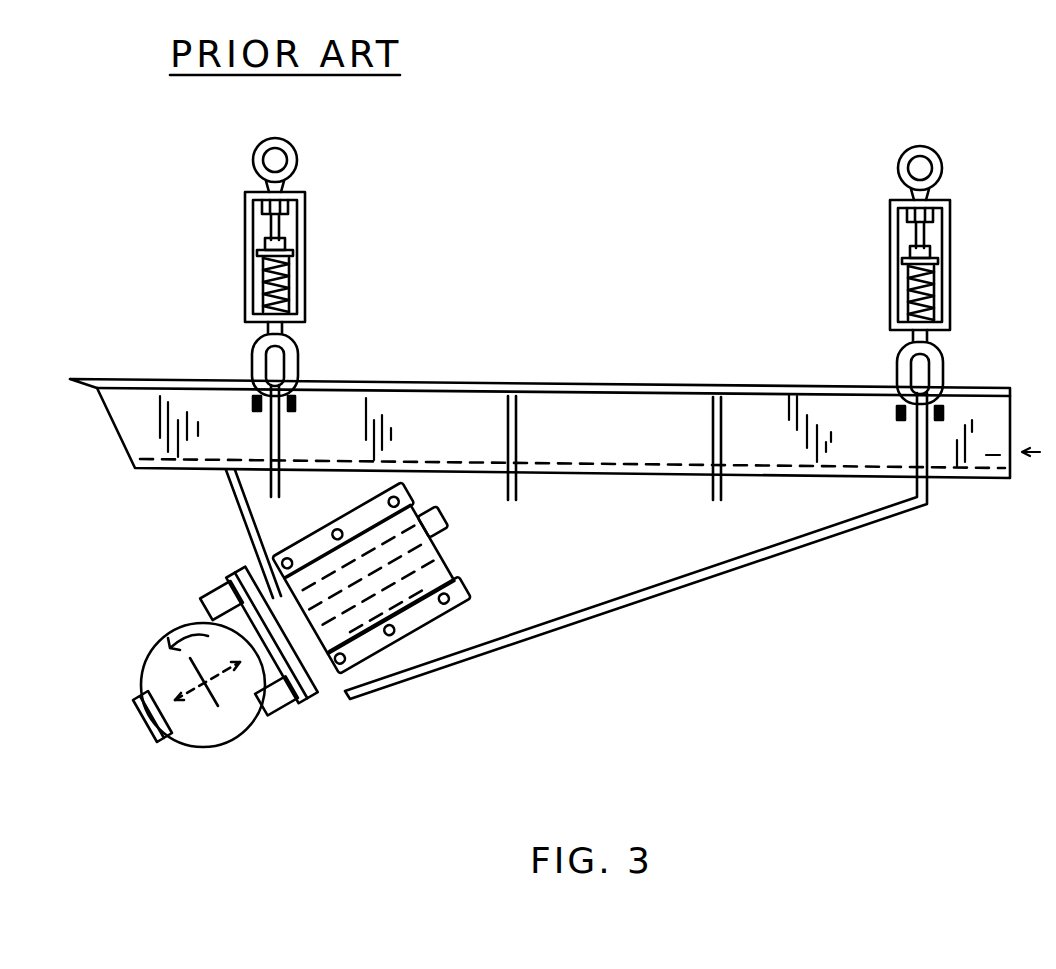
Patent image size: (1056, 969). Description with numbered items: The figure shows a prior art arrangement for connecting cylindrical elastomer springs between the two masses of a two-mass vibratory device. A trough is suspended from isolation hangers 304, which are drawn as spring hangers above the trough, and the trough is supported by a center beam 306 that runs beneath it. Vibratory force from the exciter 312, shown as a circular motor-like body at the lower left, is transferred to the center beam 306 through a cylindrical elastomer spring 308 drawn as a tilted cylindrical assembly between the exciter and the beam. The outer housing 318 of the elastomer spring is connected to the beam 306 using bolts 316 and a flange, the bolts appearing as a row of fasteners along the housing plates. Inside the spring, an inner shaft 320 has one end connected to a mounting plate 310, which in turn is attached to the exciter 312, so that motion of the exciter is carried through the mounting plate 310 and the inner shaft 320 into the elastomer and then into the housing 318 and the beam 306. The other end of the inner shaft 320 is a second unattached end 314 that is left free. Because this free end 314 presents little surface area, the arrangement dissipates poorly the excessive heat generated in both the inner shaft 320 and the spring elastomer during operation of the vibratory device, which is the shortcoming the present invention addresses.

The isolation hangers 304 is at (305, 229).
The center beam 306 is at (666, 592).
The cylindrical elastomer spring 308 is at (557, 394).
The mounting plate 310 is at (302, 705).
The exciter 312 is at (170, 742).
The second unattached end 314 is at (450, 531).
The bolts 316 is at (393, 492).
The outer housing 318 is at (430, 618).
The inner shaft 320 is at (312, 606).